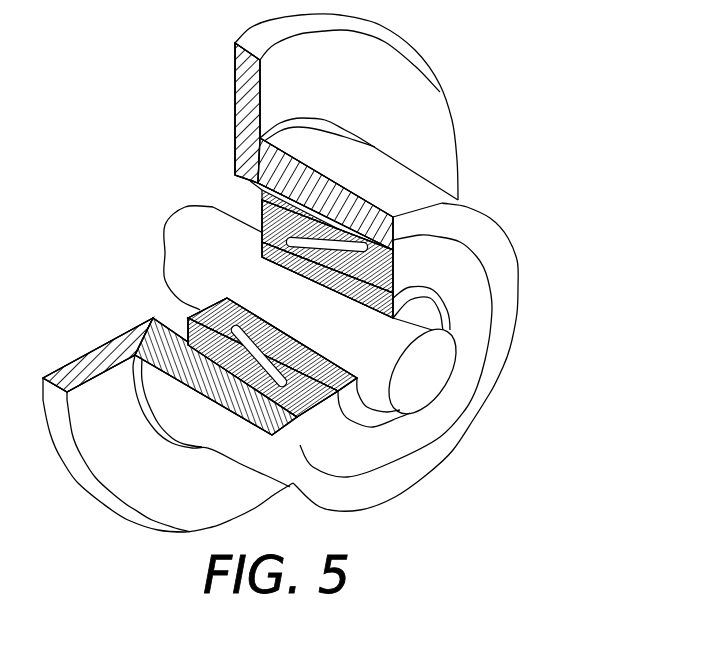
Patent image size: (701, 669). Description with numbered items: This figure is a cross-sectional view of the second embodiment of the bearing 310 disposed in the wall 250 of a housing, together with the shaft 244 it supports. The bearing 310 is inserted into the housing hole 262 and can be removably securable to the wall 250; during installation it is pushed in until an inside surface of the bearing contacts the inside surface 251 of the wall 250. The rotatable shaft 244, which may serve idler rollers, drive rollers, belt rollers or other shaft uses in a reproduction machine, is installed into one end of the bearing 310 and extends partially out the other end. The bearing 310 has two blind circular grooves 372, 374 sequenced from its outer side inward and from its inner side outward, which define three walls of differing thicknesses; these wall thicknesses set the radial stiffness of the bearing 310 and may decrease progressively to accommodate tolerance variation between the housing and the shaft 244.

The wall 250 is at (432, 101).
The inside surface 251 is at (257, 184).
The shaft 244 is at (204, 230).
The groove 374 is at (359, 206).
The groove 372 is at (396, 293).
The bearing 310 is at (185, 303).
The housing hole 262 is at (349, 478).